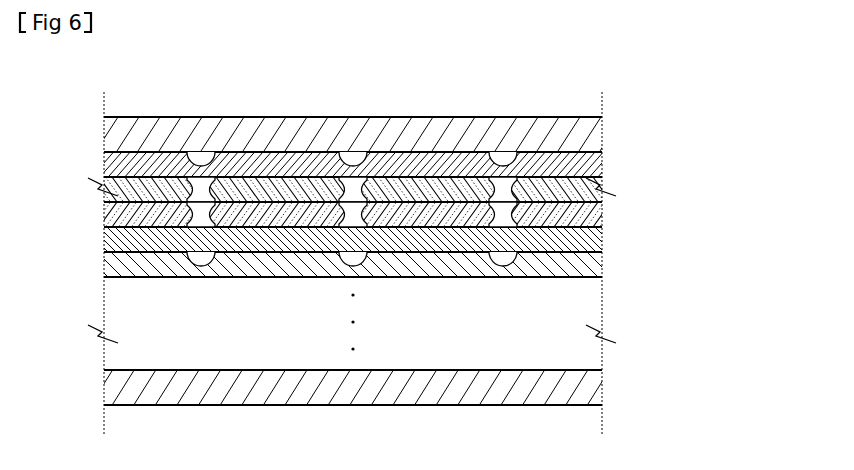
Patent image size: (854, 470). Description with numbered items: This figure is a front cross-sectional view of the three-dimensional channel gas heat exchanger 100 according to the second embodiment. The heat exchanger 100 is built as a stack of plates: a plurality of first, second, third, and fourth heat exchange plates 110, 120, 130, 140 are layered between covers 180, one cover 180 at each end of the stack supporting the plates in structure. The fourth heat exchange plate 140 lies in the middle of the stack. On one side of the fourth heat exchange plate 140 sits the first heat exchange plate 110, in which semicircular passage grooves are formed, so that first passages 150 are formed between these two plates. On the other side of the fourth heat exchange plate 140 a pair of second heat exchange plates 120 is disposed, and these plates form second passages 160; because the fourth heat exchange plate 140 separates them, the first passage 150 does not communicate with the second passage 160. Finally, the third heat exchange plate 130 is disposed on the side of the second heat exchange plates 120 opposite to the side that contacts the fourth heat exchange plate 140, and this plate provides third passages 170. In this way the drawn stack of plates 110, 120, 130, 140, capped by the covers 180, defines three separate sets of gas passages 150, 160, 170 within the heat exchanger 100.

The 3-D channel gas heat exchanger 100 is at (198, 107).
The first heat exchange plate 110 is at (602, 265).
The second heat exchange plate 120 is at (592, 178).
The third heat exchange plate 130 is at (602, 165).
The fourth heat exchange plate 140 is at (602, 236).
The first passage 150 is at (472, 230).
The second passage 160 is at (540, 198).
The third passage 170 is at (503, 160).
The cover 180 is at (283, 122).